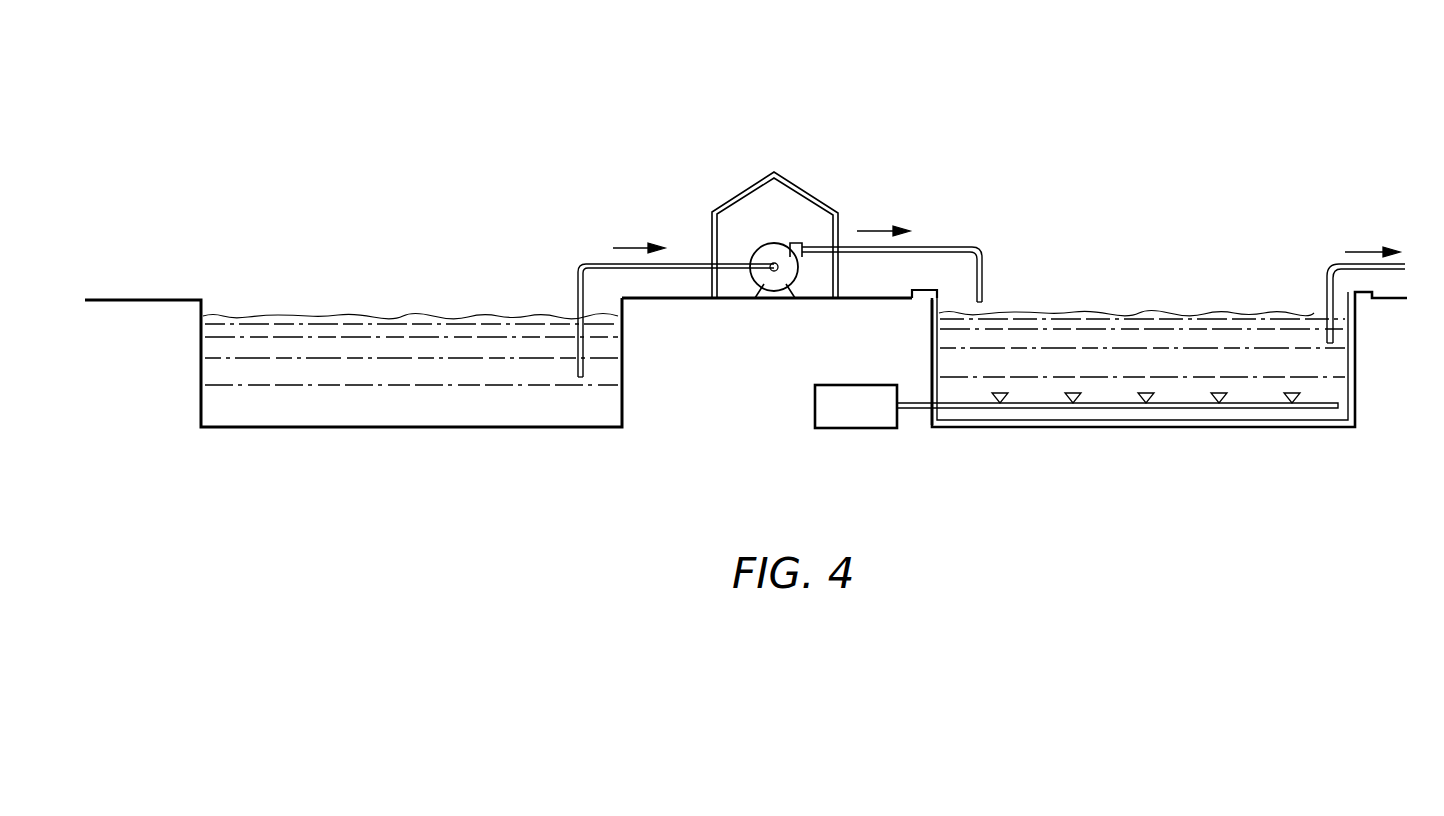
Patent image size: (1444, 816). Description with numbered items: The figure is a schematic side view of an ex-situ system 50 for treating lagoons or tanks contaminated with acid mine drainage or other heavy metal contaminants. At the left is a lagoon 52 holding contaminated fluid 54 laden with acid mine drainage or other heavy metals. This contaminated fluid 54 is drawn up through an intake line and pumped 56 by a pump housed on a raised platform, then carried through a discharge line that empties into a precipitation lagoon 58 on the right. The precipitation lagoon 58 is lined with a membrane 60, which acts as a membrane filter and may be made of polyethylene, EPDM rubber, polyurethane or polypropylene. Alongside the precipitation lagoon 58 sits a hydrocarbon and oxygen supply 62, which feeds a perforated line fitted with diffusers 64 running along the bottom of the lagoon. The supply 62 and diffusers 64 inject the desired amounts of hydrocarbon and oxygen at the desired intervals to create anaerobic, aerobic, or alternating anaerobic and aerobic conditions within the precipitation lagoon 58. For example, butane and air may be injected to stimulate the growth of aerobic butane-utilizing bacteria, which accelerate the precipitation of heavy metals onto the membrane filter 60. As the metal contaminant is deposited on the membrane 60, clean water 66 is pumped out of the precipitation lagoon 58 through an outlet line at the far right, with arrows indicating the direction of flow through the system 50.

The ex-situ system 50 is at (469, 132).
The lagoon 52 is at (210, 370).
The contaminated fluid 54 is at (585, 367).
The pump 56 is at (758, 243).
The precipitation lagoon 58 is at (1056, 340).
The membrane 60 is at (932, 340).
The hydrocarbon and oxygen supply 62 is at (852, 418).
The diffusers 64 is at (1071, 398).
The clean water 66 is at (1327, 292).